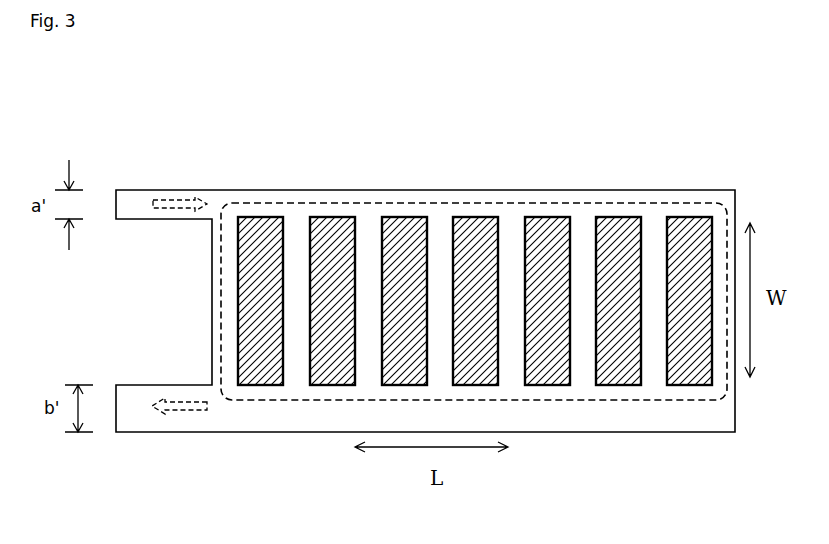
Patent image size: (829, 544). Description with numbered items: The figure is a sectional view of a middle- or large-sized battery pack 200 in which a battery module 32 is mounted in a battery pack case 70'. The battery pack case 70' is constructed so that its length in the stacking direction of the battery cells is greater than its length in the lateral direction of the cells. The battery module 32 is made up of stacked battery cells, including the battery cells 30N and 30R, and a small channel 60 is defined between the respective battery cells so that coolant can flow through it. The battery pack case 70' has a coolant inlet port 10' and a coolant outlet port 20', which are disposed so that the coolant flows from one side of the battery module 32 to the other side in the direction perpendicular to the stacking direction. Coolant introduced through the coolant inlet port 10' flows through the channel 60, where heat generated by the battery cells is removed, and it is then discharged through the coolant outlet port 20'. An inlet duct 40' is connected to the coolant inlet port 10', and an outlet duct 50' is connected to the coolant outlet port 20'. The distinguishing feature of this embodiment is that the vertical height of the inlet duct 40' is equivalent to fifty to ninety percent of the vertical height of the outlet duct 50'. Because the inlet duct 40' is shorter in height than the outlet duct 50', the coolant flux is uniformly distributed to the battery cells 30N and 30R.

The middle- or large-sized battery pack 200 is at (58, 83).
The coolant inlet port 10' is at (155, 161).
The coolant outlet port 20' is at (147, 452).
The battery cell 30N is at (270, 377).
The battery cell 30R is at (694, 373).
The battery module 32 is at (660, 203).
The inlet duct 40' is at (147, 243).
The outlet duct 50' is at (157, 363).
The channel 60 is at (582, 229).
The battery pack case 70' is at (473, 273).